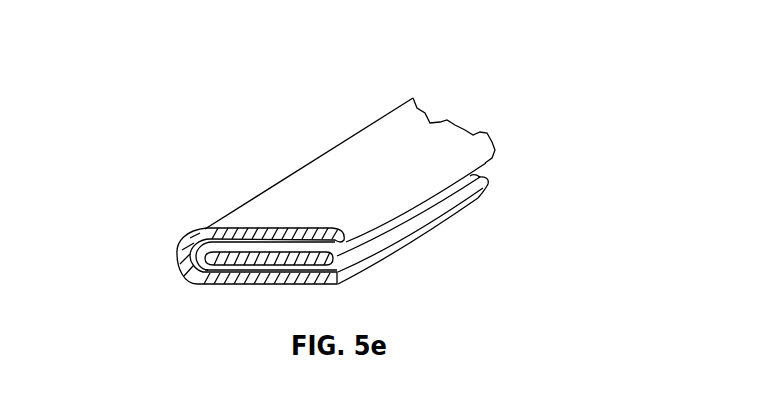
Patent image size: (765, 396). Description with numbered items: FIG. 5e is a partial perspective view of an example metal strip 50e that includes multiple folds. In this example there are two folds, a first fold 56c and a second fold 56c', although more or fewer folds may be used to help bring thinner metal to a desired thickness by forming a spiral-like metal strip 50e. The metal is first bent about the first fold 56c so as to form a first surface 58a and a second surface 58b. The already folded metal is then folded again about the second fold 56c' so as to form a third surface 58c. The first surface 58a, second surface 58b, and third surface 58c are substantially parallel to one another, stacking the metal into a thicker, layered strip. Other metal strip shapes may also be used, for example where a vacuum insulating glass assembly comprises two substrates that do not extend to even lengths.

The metal strip 50e is at (266, 150).
The first surface 58a is at (253, 205).
The second surface 58b is at (184, 275).
The third surface 58c is at (398, 240).
The first fold 56c is at (408, 230).
The second fold 56c' is at (156, 230).